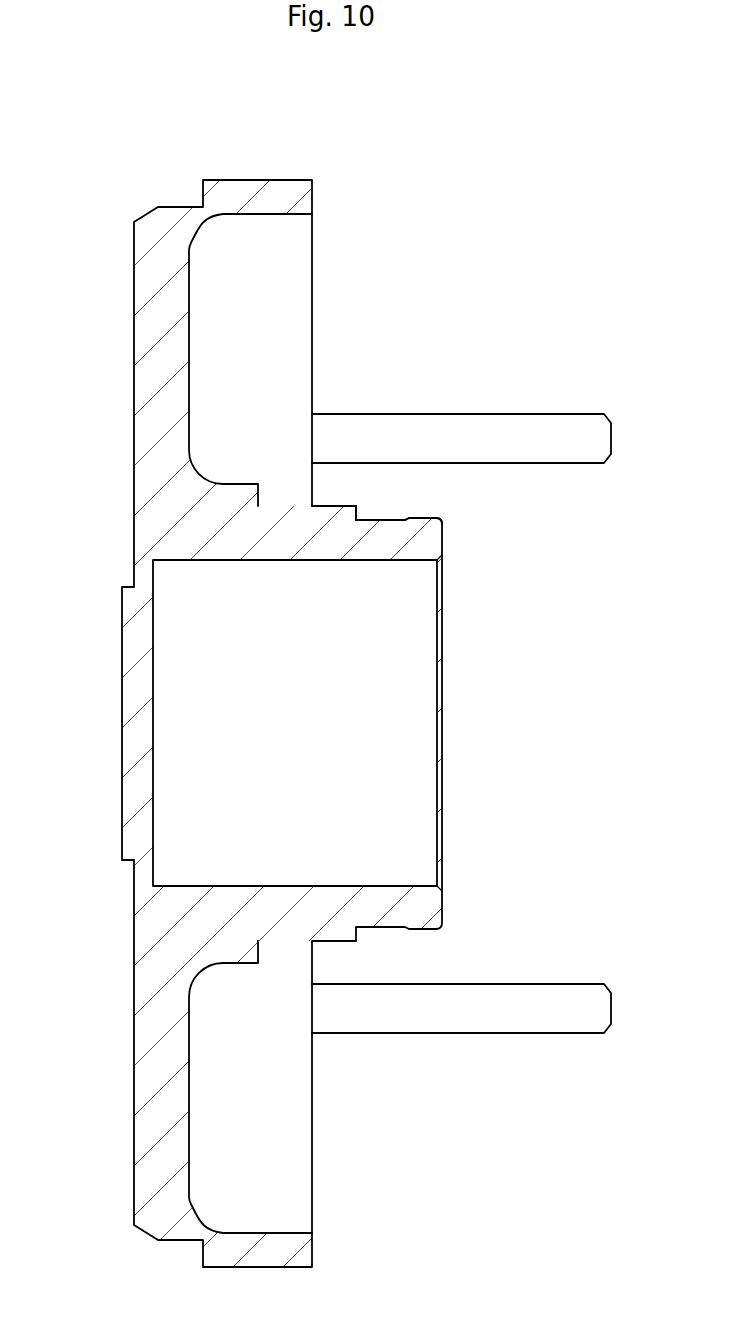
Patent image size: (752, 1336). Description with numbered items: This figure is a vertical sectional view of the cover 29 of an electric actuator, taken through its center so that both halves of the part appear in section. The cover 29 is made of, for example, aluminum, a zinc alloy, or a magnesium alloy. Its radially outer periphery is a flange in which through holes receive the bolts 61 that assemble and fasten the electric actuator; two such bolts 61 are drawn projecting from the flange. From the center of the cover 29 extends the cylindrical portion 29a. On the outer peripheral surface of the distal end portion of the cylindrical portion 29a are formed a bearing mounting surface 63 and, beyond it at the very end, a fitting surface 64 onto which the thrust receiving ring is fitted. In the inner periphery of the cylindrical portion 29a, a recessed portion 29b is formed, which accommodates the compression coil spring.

The cover 29 is at (250, 180).
The cylindrical portion 29a is at (300, 532).
The recessed portion 29b is at (270, 560).
The bolt 61 is at (493, 414).
The bearing mounting surface 63 is at (380, 518).
The fitting surface 64 is at (423, 522).